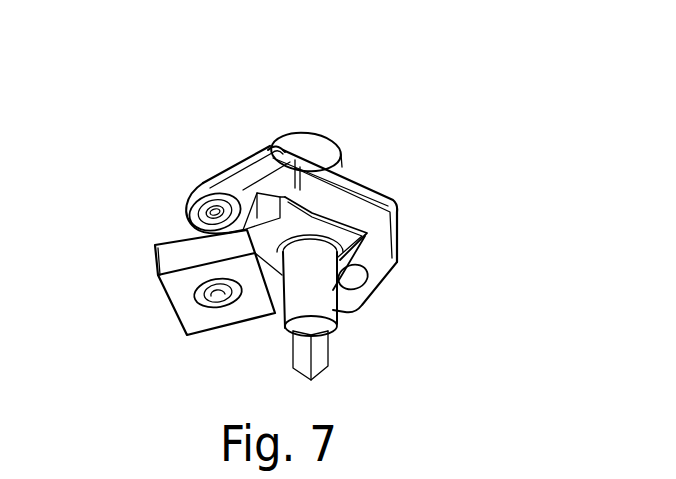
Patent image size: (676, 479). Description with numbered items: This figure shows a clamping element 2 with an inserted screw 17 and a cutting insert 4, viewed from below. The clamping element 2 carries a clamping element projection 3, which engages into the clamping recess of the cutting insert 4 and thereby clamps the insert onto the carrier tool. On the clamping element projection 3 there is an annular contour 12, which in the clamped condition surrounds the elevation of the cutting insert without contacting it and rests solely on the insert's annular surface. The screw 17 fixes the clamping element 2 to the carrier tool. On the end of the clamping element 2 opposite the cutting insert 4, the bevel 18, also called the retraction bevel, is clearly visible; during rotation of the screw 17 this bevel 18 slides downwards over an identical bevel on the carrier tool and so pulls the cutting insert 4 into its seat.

The clamping element 2 is at (367, 215).
The clamping element projection 3 is at (223, 170).
The cutting insert 4 is at (190, 318).
The annular contour 12 is at (190, 210).
The screw 17 is at (317, 147).
The bevel 18 is at (370, 258).